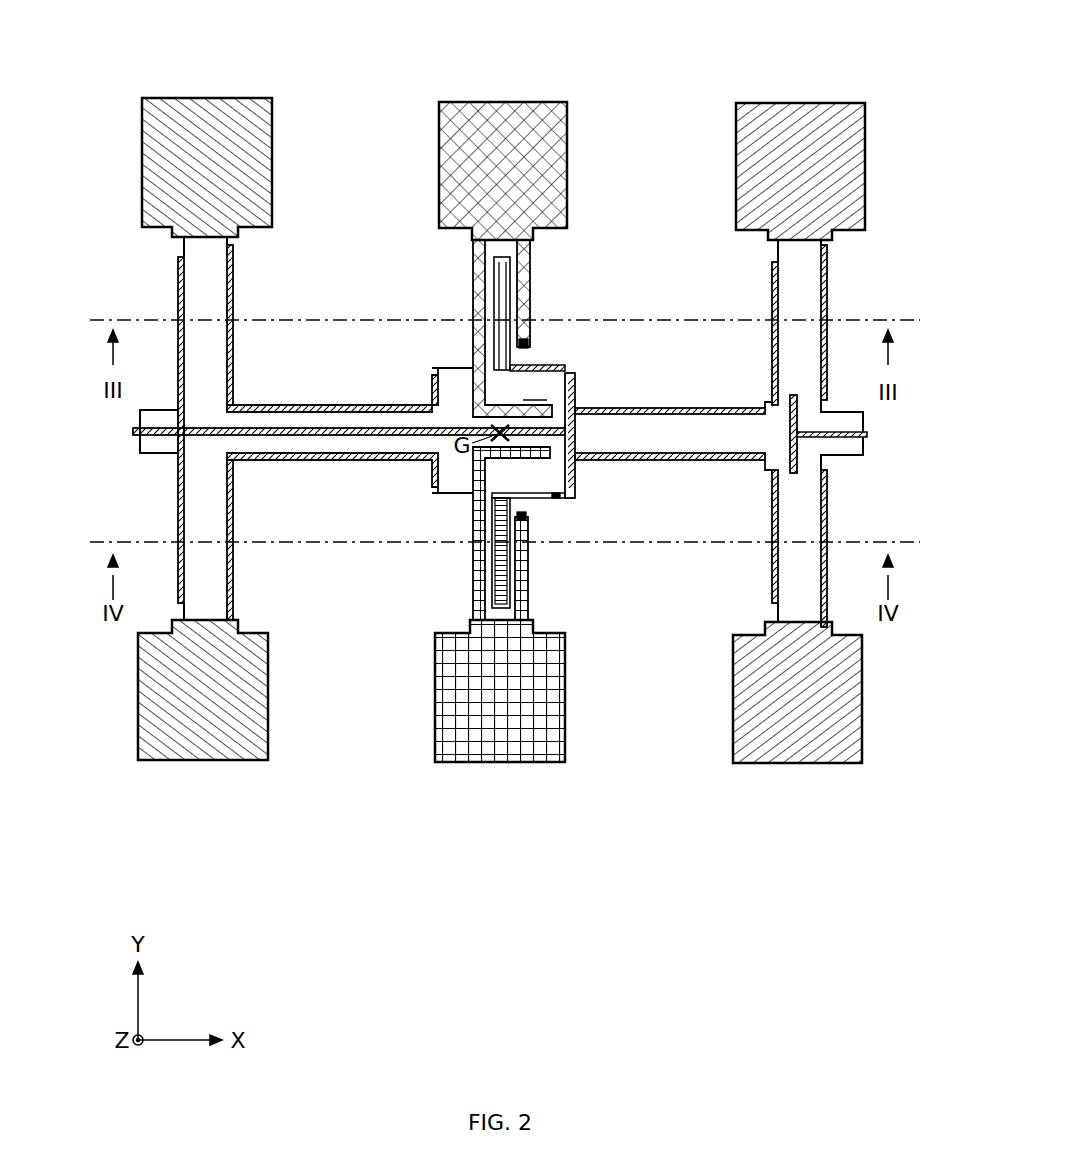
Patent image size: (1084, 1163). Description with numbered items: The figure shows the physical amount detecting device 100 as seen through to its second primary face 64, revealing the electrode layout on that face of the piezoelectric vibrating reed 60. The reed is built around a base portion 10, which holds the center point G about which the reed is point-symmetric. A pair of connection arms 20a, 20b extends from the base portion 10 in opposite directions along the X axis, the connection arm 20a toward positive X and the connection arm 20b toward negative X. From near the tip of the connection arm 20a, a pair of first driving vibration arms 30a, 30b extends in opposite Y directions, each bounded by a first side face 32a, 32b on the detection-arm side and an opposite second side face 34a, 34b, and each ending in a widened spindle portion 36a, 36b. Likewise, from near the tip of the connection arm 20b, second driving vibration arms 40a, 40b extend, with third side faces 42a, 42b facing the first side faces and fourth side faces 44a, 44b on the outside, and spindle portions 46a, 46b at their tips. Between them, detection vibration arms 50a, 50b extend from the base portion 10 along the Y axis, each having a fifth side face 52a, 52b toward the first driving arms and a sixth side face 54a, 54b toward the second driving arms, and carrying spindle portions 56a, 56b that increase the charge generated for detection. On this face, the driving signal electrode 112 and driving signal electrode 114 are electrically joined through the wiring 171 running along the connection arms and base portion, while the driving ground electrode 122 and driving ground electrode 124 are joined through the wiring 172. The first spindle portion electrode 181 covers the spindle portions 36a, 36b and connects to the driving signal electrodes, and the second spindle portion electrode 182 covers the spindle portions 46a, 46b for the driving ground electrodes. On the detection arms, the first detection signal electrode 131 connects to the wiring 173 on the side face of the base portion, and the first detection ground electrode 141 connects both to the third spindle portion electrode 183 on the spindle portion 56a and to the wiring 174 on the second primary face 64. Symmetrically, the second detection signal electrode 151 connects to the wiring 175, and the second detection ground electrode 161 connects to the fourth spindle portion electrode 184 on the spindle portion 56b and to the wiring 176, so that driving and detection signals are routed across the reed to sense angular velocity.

The physical amount detecting device 100 is at (807, 34).
The piezoelectric vibrating reed 60 is at (161, 73).
The base portion 10 is at (460, 403).
The connection arm 20a is at (681, 410).
The connection arm 20b is at (352, 410).
The first driving vibration arm 30a is at (802, 365).
The first driving vibration arm 30b is at (805, 503).
The first side face 32a is at (763, 289).
The first side face 32b is at (758, 569).
The second side face 34a is at (832, 289).
The second side face 34b is at (840, 569).
The spindle portion 36a is at (848, 157).
The spindle portion 36b is at (848, 690).
The second driving vibration arm 40a is at (213, 355).
The second driving vibration arm 40b is at (213, 500).
The third side face 42a is at (237, 289).
The third side face 42b is at (244, 566).
The fourth side face 44a is at (174, 289).
The fourth side face 44b is at (168, 566).
The spindle portion 46a is at (262, 157).
The spindle portion 46b is at (258, 690).
The detection vibration arm 50a is at (528, 344).
The detection vibration arm 50b is at (528, 527).
The fifth side face 52a is at (532, 289).
The fifth side face 52b is at (531, 569).
The sixth side face 54a is at (469, 289).
The sixth side face 54b is at (470, 569).
The spindle portion 56a is at (545, 157).
The spindle portion 56b is at (548, 686).
The second primary face 64 is at (535, 388).
The second driving signal electrode 112 is at (827, 312).
The fourth driving signal electrode 114 is at (178, 312).
The second driving ground electrode 122 is at (772, 312).
The fourth driving ground electrode 124 is at (233, 312).
The first detection signal electrode 131 is at (500, 344).
The first detection ground electrode 141 is at (478, 320).
The second detection signal electrode 151 is at (500, 532).
The second detection ground electrode 161 is at (476, 560).
The wiring 171 is at (357, 437).
The wiring 172 is at (305, 405).
The wiring 173 is at (560, 368).
The wiring 174 is at (478, 388).
The wiring 175 is at (565, 495).
The wiring 176 is at (473, 480).
The first spindle portion electrode 181 is at (760, 155).
The second spindle portion electrode 182 is at (165, 155).
The third spindle portion electrode 183 is at (458, 155).
The fourth spindle portion electrode 184 is at (458, 683).